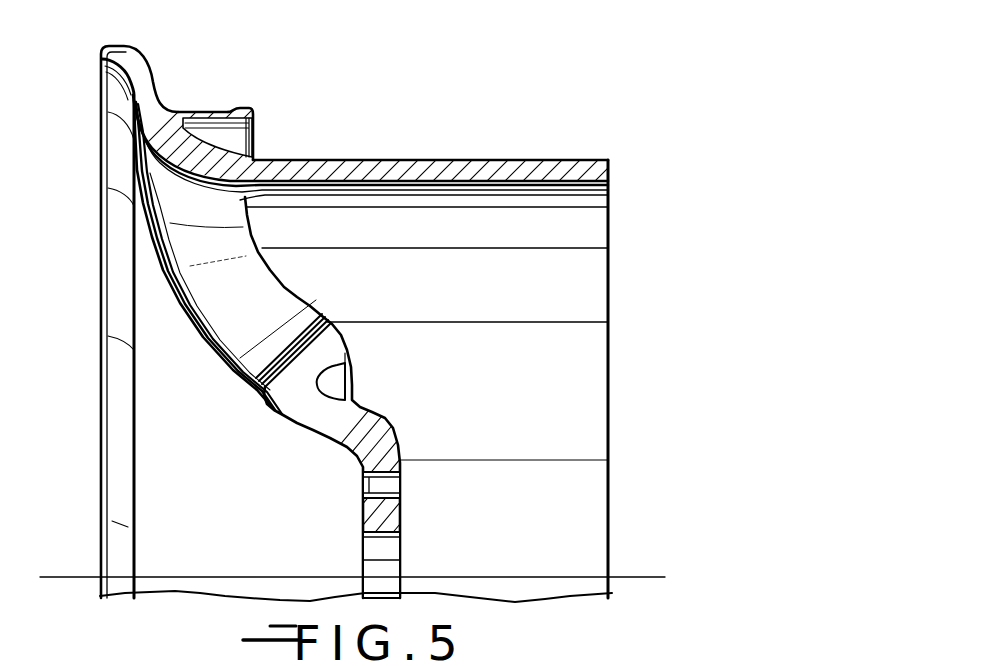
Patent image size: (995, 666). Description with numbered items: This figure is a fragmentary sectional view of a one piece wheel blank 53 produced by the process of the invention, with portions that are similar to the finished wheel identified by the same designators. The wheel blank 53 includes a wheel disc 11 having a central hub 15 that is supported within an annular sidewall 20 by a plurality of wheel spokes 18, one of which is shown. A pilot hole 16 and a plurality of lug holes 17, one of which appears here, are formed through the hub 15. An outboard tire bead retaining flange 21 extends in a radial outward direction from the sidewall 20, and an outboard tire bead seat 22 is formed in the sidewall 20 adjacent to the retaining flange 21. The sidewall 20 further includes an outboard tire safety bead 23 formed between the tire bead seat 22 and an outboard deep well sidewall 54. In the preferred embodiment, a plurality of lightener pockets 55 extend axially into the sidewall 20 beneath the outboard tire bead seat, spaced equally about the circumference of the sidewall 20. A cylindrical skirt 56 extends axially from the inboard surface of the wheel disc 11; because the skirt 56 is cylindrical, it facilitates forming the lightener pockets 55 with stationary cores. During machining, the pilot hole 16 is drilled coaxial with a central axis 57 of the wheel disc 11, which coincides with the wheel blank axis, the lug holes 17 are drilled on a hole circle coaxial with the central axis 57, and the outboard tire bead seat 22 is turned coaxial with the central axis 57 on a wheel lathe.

The wheel disc 11 is at (385, 375).
The central hub 15 is at (327, 420).
The pilot hole 16 is at (408, 563).
The lug holes 17 is at (405, 489).
The wheel spokes 18 is at (308, 284).
The annular sidewall 20 is at (193, 163).
The outboard tire bead retaining flange 21 is at (150, 72).
The outboard tire bead seat 22 is at (189, 111).
The outboard tire safety bead 23 is at (233, 110).
The wheel blank 53 is at (443, 138).
The outboard deep well sidewall 54 is at (253, 134).
The lightener pockets 55 is at (265, 146).
The cylindrical skirt 56 is at (560, 166).
The central axis 57 is at (637, 577).